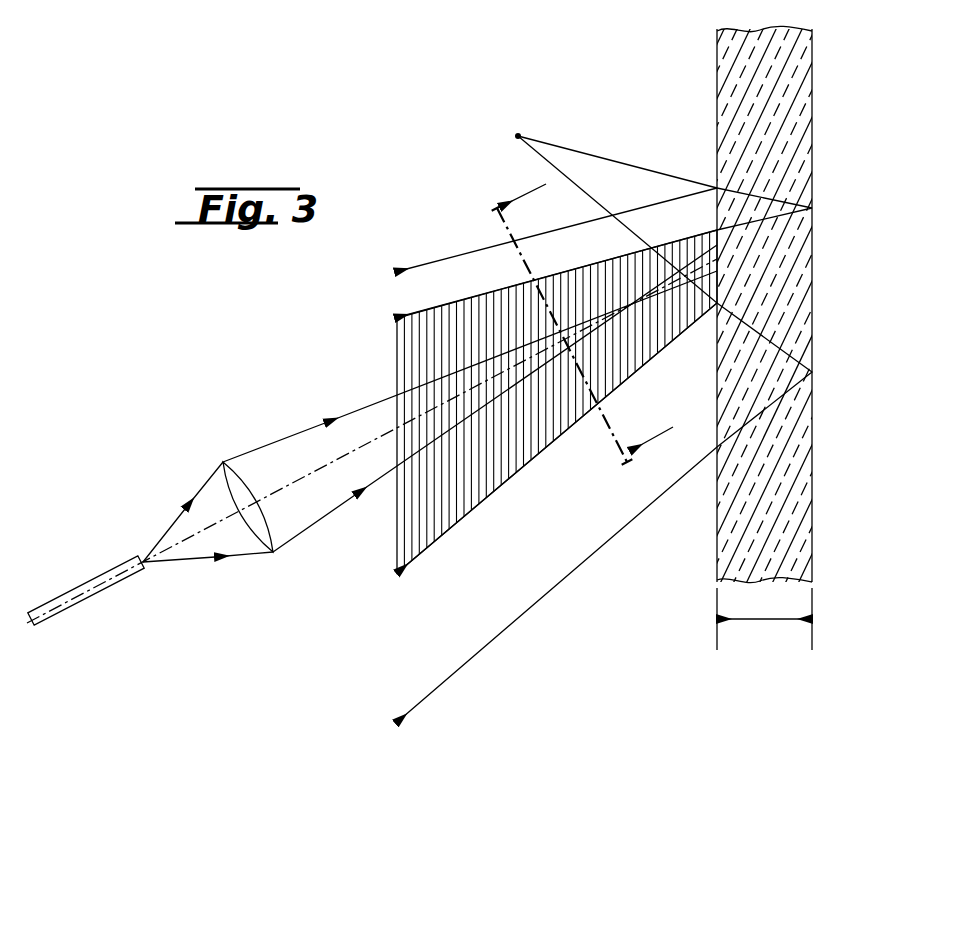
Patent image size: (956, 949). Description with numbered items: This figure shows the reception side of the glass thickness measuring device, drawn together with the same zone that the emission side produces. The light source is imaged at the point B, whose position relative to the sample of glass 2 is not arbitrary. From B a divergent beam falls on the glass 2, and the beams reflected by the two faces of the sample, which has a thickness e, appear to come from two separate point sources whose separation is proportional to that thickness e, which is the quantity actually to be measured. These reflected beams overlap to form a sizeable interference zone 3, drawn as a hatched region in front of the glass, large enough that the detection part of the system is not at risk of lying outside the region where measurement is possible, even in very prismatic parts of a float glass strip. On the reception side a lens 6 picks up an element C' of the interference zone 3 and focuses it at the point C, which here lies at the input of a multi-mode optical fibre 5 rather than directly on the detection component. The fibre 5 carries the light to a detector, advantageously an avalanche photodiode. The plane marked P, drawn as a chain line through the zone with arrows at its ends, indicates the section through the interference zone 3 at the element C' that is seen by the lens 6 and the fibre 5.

The sample of glass 2 is at (793, 54).
The interference zone 3 is at (484, 484).
The multi-mode optical fibre 5 is at (80, 590).
The lens 6 is at (256, 528).
The image of the source output B is at (515, 133).
The focus point C is at (208, 536).
The element of the interference zone C' is at (574, 432).
The plane P- P is at (576, 334).
The thickness e is at (764, 619).